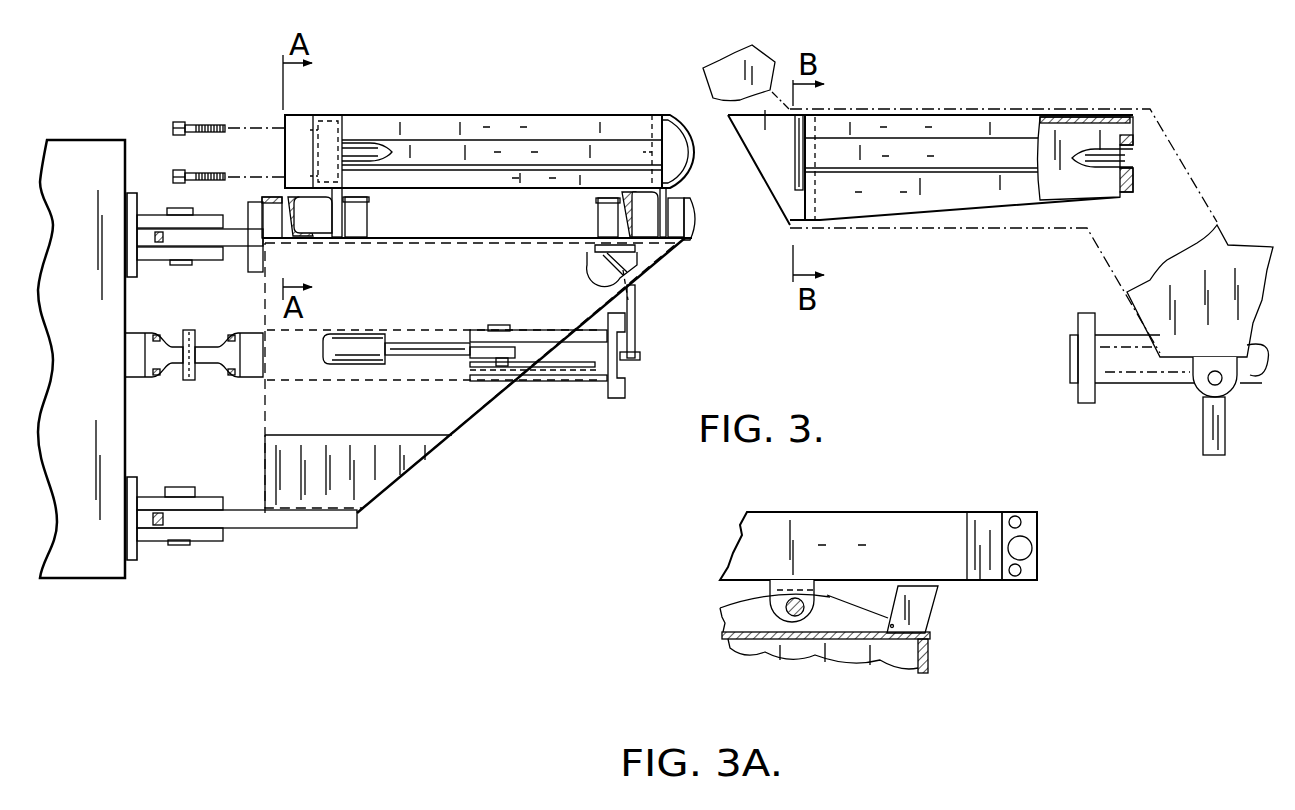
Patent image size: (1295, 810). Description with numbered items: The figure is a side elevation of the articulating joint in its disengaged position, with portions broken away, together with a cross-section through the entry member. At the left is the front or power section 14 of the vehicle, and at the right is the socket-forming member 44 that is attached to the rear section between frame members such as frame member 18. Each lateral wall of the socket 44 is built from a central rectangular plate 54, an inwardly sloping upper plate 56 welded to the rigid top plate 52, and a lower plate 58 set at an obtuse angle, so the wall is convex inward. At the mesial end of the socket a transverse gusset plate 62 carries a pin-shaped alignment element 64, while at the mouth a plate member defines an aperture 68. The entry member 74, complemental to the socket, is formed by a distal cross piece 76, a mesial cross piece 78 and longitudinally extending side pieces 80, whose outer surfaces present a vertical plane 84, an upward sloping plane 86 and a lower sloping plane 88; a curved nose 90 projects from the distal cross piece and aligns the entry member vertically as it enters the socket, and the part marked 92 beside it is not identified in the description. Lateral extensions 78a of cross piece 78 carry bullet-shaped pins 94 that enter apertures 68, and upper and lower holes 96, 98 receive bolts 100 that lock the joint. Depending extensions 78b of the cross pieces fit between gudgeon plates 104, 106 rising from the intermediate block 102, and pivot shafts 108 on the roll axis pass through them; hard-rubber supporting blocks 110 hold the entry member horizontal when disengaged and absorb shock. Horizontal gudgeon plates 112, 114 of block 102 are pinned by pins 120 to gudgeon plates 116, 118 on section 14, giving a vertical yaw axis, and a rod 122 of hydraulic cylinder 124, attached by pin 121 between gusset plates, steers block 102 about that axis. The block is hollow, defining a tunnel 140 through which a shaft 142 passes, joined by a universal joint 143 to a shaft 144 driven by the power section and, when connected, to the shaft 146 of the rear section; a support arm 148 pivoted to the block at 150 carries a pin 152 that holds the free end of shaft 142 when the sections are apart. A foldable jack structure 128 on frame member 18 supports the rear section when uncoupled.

In FIG. 3, the front or power section 14 is at (97, 419).
In FIG. 3, the frame member 18 is at (757, 60).
In FIG. 3, the socket-forming member 44 is at (966, 115).
In FIG. 3, the rigid plate 52 is at (1060, 117).
In FIG. 3, the central elongated rectangular plate 54 is at (908, 155).
In FIG. 3, the inwardly sloping plate 56 is at (906, 126).
In FIG. 3, the lower plate 58 is at (881, 191).
In FIG. 3, the transverse gusset plate 62 is at (1133, 182).
In FIG. 3, the pin shaped alignment element 64 is at (1135, 158).
In FIG. 3, the aperture 68 is at (800, 158).
In FIG. 3, the entry member 74 is at (408, 114).
In FIG. 3A, the entry member 74 is at (928, 511).
In FIG. 3, the distal cross piece 76 is at (652, 115).
In FIG. 3, the mesial cross piece 78 is at (290, 114).
In FIG. 3A, the mesial cross piece 78 is at (910, 546).
In FIG. 3, the lateral extensions 78a is at (330, 114).
In FIG. 3A, the lateral extensions 78a is at (1030, 582).
In FIG. 3, the depending extension 78b is at (337, 237).
In FIG. 3A, the depending extension 78b is at (820, 600).
In FIG. 3, the side piece 80 is at (470, 190).
In FIG. 3, the vertically extending plane 84 is at (516, 151).
In FIG. 3, the upward sloping plane 86 is at (505, 126).
In FIG. 3, the lower sloping plane 88 is at (534, 177).
In FIG. 3, the nose 90 is at (688, 172).
In FIG. 3, the end portion 92 is at (636, 152).
In FIG. 3, the bullet shaped pin 94 is at (392, 152).
In FIG. 3A, the bullet shaped pin 94 is at (1032, 548).
In FIG. 3, the upper hole 96 is at (303, 132).
In FIG. 3A, the upper hole 96 is at (1020, 517).
In FIG. 3, the lower hole 98 is at (303, 174).
In FIG. 3A, the lower hole 98 is at (1010, 576).
In FIG. 3, the bolts 100 is at (205, 136).
In FIG. 3, the intermediate block 102 is at (388, 462).
In FIG. 3A, the intermediate block 102 is at (930, 660).
In FIG. 3, the gudgeon plates 104 is at (712, 238).
In FIG. 3, the upstanding gudgeon plates 106 is at (355, 230).
In FIG. 3A, the upstanding gudgeon plates 106 is at (858, 628).
In FIG. 3, the pivot shafts 108 is at (367, 215).
In FIG. 3A, the pivot shafts 108 is at (786, 611).
In FIG. 3, the supporting blocks 110 is at (320, 237).
In FIG. 3A, the supporting blocks 110 is at (920, 610).
In FIG. 3, the horizontally extending gudgeon plate 112 is at (232, 244).
In FIG. 3, the horizontally extending gudgeon plate 114 is at (233, 522).
In FIG. 3, the gudgeon plate 116 is at (145, 262).
In FIG. 3, the gudgeon plate 118 is at (145, 498).
In FIG. 3, the pins 120 is at (192, 210).
In FIG. 3, the pin 121 is at (500, 328).
In FIG. 3, the rod 122 is at (412, 350).
In FIG. 3, the hydraulic cylinder 124 is at (345, 360).
In FIG. 3, the jack structure 128 is at (1226, 428).
In FIG. 3, the tunnel 140 is at (262, 418).
In FIG. 3, the shaft 142 is at (250, 378).
In FIG. 3, the universal joint 143 is at (189, 330).
In FIG. 3, the shaft 144 is at (133, 378).
In FIG. 3, the shaft 146 is at (1128, 383).
In FIG. 3, the support arm 148 is at (635, 320).
In FIG. 3, the pivotal mounting 150 is at (590, 262).
In FIG. 3, the pin 152 is at (620, 370).